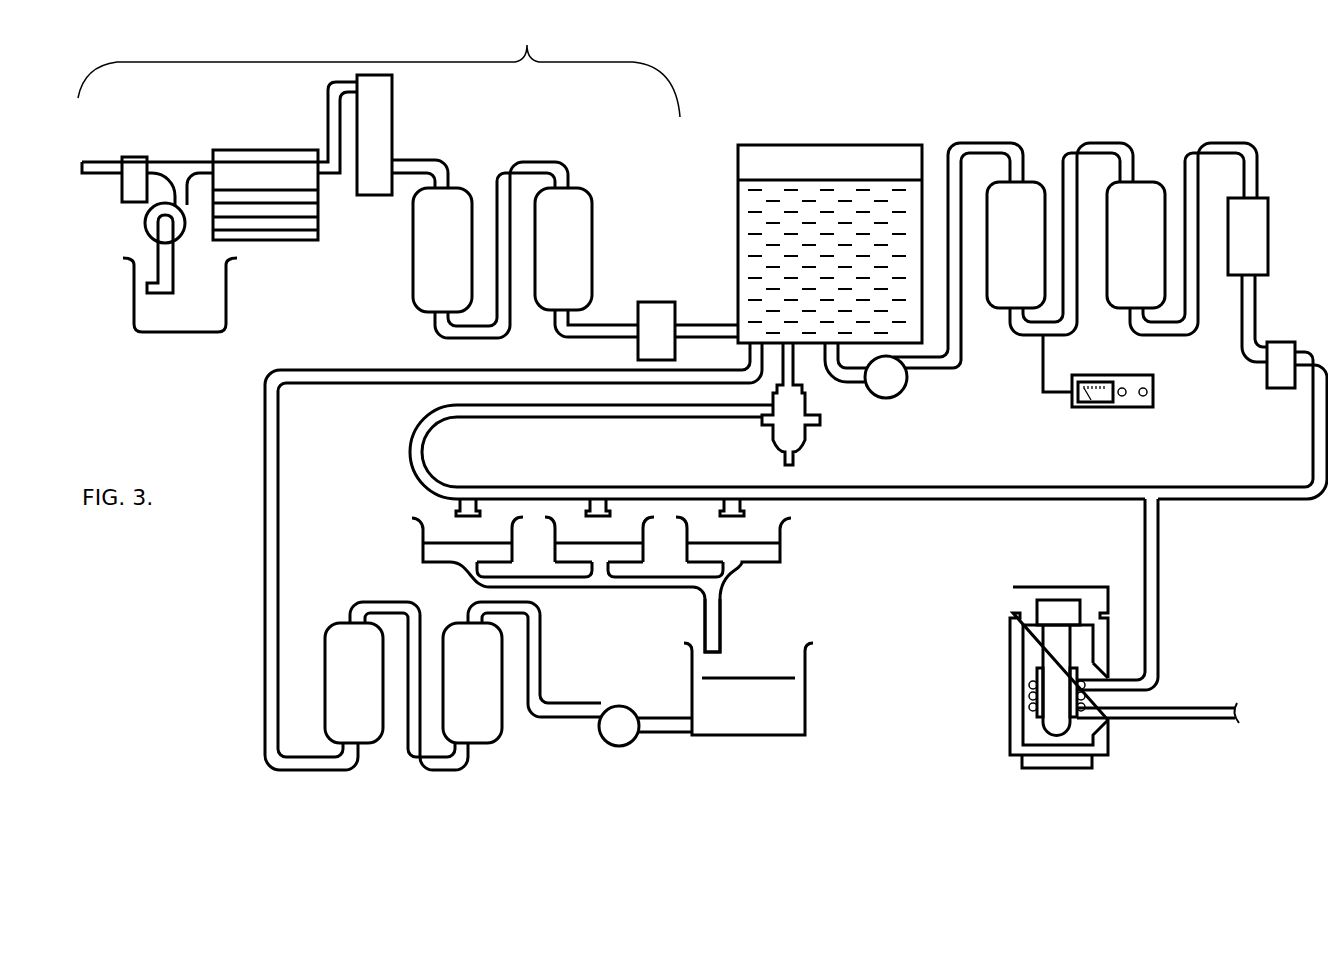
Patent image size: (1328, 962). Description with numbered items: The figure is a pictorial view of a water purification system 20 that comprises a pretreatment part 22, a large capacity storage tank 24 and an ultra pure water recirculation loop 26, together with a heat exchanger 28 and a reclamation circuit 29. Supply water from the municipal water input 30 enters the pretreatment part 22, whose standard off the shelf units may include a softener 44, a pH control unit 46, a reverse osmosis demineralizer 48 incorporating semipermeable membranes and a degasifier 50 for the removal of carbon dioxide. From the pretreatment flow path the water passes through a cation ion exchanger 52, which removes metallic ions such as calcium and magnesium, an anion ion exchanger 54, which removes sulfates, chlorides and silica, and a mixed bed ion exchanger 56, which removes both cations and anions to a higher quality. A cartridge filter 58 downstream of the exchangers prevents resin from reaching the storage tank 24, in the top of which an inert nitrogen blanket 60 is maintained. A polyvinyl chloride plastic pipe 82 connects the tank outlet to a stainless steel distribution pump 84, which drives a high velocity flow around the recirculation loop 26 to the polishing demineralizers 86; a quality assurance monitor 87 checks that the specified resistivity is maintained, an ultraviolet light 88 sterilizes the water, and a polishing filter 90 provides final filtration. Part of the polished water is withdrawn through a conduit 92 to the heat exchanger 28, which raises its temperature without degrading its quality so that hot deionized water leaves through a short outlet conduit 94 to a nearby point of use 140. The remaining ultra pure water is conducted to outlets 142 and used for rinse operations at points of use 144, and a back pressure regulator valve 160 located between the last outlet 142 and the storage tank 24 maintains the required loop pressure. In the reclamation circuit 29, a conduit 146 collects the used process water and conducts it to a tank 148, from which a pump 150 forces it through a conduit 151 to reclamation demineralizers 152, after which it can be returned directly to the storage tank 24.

The water purification system 20 is at (172, 433).
The pretreatment part 22 is at (379, 68).
The large capacity storage tank 24 is at (844, 217).
The ultra pure water recirculation loop 26 is at (962, 374).
The heat exchanger 28 is at (1004, 663).
The reclamation circuit 29 is at (414, 543).
The municipal water input 30 is at (84, 165).
The softener 44 is at (120, 198).
The pH control unit 46 is at (226, 318).
The reverse osmosis demineralizer 48 is at (247, 150).
The degasifier 50 is at (392, 118).
The cation ion exchanger 52 is at (469, 250).
The anion ion exchanger 54 is at (418, 270).
The mixed bed ion exchanger 56 is at (592, 216).
The cartridge filter 58 is at (652, 302).
The inert nitrogen blanket 60 is at (838, 171).
The polyvinyl chloride plastic pipe 82 is at (856, 385).
The distribution pump 84 is at (905, 394).
The polishing demineralizers 86 is at (1028, 182).
The quality assurance monitor 87 is at (1153, 390).
The ultraviolet light 88 is at (1268, 216).
The 0.2 micron filter 90 is at (1285, 342).
The conduit 92 is at (1159, 584).
The outlet conduit 94 is at (1190, 708).
The point of use 140 is at (1240, 715).
The outlets 142 is at (456, 508).
The points of use 144 is at (573, 530).
The conduit 146 is at (704, 620).
The tank 148 is at (702, 668).
The pump 150 is at (623, 742).
The conduit 151 is at (540, 645).
The reclamation demineralizers 152 is at (345, 630).
The back pressure regulator valve 160 is at (806, 440).